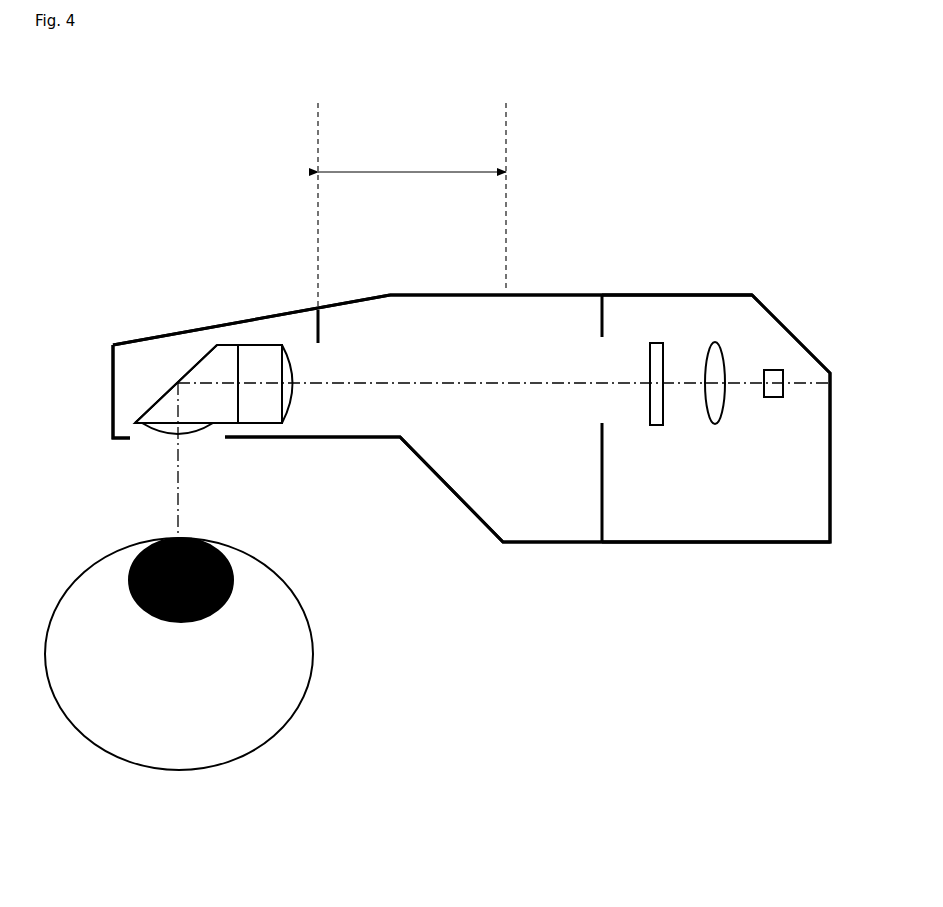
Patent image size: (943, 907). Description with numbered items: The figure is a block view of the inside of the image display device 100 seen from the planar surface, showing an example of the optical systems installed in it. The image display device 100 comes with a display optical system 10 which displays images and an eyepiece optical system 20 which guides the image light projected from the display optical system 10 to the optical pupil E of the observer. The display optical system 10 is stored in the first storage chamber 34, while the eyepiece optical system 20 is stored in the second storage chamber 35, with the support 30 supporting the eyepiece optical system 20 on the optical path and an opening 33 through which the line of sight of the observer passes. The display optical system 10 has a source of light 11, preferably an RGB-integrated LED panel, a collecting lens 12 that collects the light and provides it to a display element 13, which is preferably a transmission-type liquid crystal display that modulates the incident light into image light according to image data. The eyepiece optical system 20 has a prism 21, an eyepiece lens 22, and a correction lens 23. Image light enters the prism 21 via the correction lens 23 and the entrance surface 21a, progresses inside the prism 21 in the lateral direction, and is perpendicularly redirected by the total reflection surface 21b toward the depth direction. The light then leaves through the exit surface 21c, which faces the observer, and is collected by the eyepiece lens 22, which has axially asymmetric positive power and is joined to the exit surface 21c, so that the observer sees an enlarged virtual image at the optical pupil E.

The image display device 100 is at (737, 207).
The display optical system 10 is at (745, 330).
The source of light 11 is at (775, 398).
The collecting lens 12 is at (712, 427).
The display element 13 is at (655, 427).
The eyepiece optical system 20 is at (133, 405).
The prism 21 is at (228, 352).
The entrance surface 21a is at (281, 412).
The total reflection surface 21b is at (165, 400).
The exit surface 21c is at (215, 432).
The eyepiece lens 22 is at (160, 434).
The correction lens 23 is at (290, 360).
The support 30 is at (540, 550).
The opening 33 is at (412, 161).
The first storage chamber 34 is at (643, 291).
The second storage chamber 35 is at (147, 336).
The optical pupil E is at (232, 570).